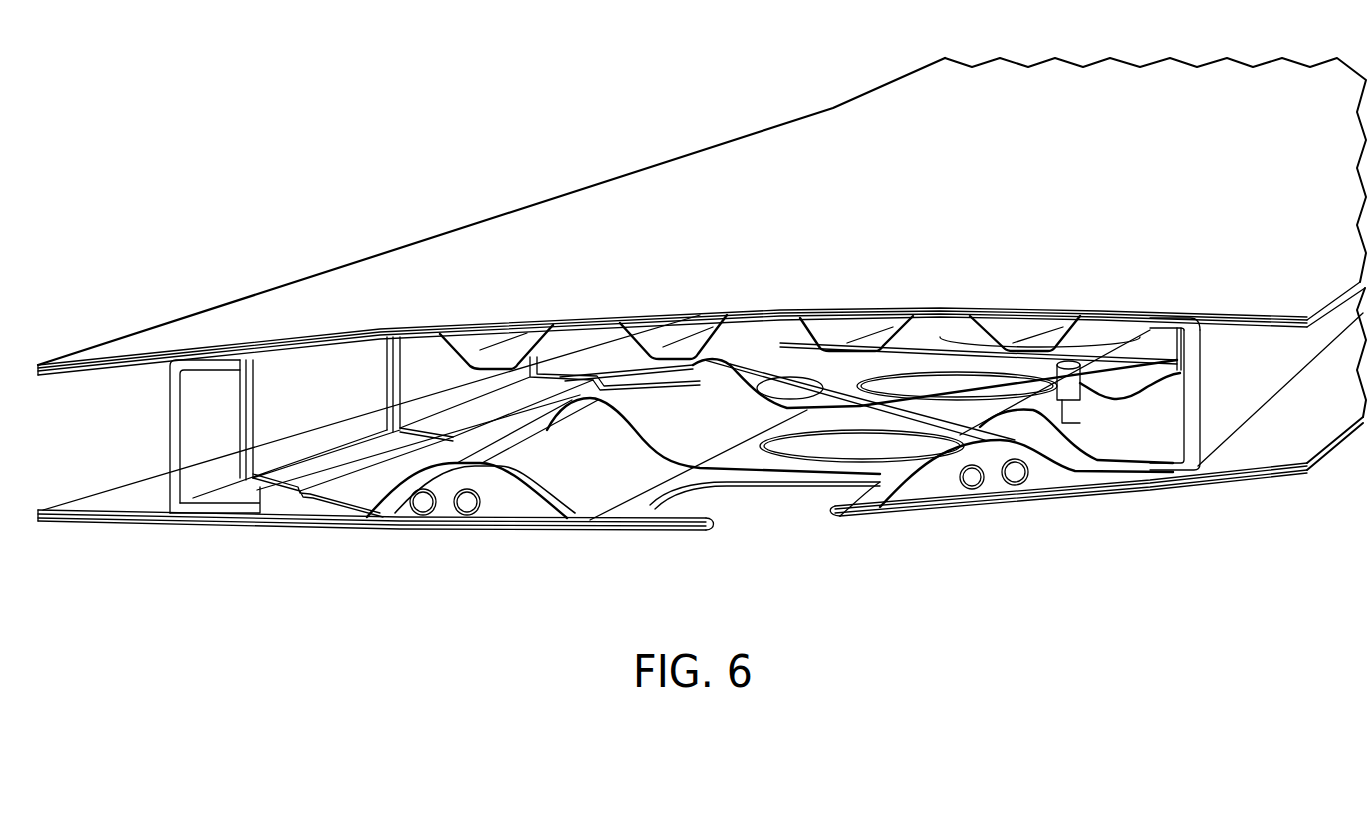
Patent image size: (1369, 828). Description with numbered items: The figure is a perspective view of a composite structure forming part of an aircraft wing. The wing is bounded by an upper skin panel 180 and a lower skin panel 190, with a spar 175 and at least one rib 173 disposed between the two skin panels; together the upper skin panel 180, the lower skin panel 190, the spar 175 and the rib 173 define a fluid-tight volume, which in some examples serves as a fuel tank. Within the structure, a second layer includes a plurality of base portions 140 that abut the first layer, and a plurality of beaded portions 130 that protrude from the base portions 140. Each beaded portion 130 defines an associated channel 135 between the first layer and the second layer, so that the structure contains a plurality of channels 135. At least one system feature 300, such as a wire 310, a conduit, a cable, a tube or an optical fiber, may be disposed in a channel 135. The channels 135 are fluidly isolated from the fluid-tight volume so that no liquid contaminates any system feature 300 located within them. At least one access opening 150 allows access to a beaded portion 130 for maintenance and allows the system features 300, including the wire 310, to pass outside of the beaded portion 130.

The beaded portion 130 is at (1000, 508).
The channel 135 is at (530, 530).
The base portion 140 is at (650, 516).
The access opening 150 is at (893, 386).
The rib 173 is at (319, 386).
The spar 175 is at (170, 424).
The upper skin panel 180 is at (1245, 316).
The lower skin panel 190 is at (1247, 472).
The system feature 300 is at (453, 518).
The wire 310 is at (1108, 372).